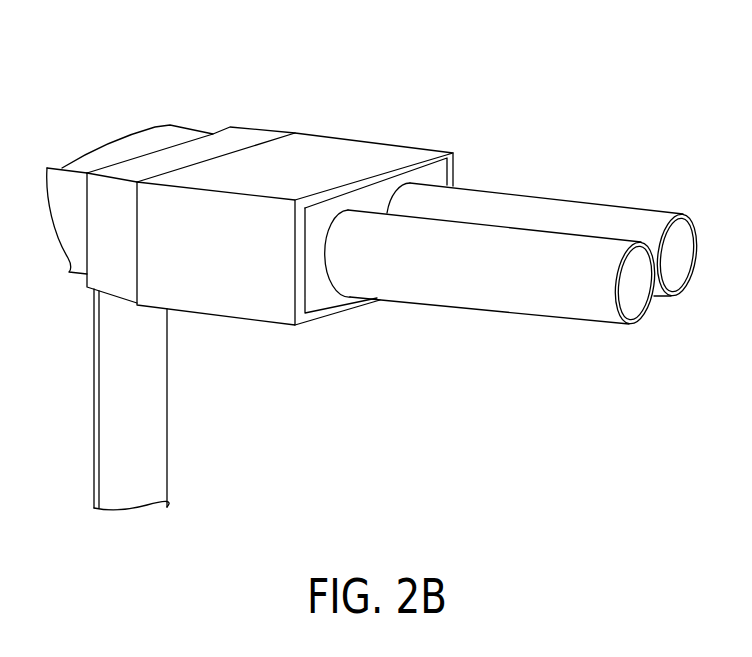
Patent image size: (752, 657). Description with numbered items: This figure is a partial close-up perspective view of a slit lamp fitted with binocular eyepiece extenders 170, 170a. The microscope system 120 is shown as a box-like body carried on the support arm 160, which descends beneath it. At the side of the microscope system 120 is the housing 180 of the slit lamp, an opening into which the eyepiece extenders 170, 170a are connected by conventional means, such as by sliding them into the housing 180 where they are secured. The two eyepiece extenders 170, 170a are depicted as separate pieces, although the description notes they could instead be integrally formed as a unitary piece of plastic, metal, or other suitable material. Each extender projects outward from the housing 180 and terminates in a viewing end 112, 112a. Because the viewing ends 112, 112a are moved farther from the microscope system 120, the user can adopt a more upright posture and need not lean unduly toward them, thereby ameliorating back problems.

The microscope system 120 is at (347, 90).
The support arm 160 is at (147, 417).
The housing 180 is at (322, 300).
The eyepiece extender 170 is at (557, 305).
The eyepiece extender 170a is at (592, 223).
The viewing end 112 is at (628, 308).
The viewing end 112a is at (677, 277).